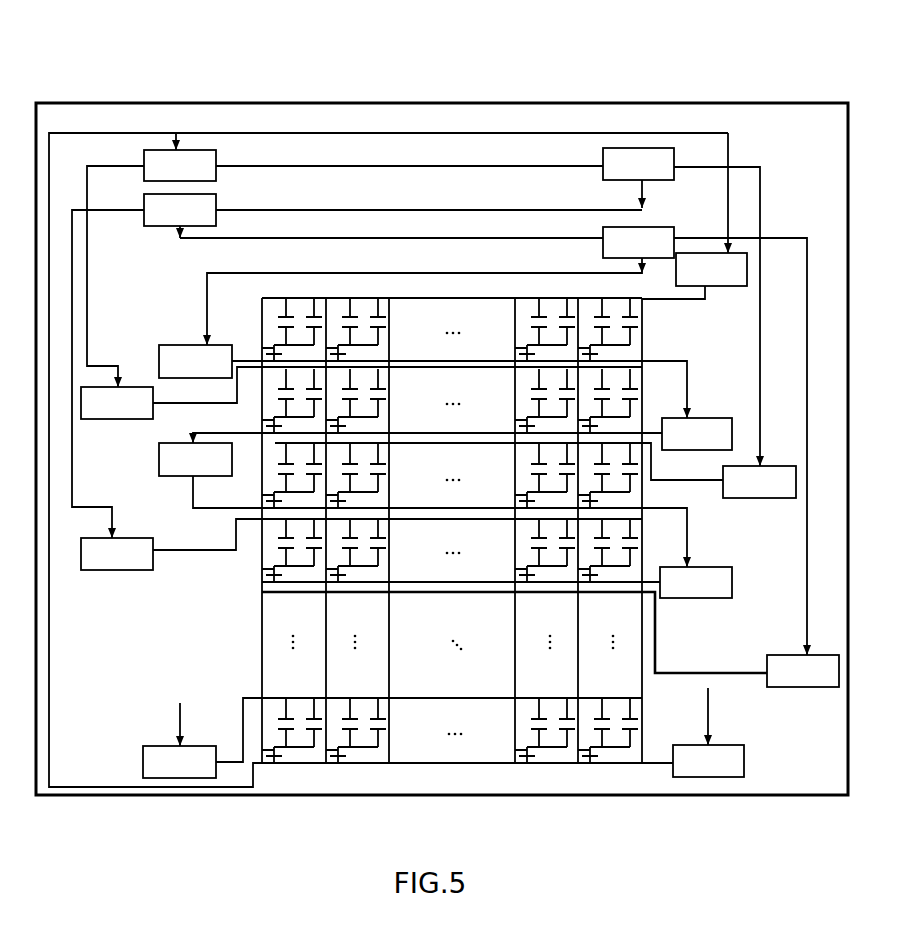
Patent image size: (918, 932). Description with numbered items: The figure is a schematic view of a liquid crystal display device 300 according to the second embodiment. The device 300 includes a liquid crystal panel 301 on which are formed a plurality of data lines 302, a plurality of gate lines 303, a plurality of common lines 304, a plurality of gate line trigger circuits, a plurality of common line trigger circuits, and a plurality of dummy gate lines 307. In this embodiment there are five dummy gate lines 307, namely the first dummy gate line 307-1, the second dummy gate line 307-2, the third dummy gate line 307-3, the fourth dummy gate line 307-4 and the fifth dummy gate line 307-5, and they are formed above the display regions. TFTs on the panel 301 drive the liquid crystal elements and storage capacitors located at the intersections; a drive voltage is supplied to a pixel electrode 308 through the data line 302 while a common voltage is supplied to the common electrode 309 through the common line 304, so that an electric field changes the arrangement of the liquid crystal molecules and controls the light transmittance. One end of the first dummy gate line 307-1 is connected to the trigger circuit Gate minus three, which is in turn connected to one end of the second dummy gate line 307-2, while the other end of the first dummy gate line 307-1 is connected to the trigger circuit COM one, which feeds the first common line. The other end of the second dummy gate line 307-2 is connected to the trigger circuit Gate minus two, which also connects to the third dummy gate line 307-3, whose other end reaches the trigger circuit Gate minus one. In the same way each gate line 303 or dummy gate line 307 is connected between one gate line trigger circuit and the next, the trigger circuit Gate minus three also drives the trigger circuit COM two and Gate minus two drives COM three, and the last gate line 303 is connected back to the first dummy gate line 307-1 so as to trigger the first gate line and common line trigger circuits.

The liquid crystal display device 300 is at (129, 31).
The liquid crystal panel 301 is at (293, 797).
The data line 302 is at (516, 728).
The gate line 303 is at (375, 763).
The common line 304 is at (427, 698).
The dummy gate lines 307 is at (292, 47).
The first dummy gate line 307-1 is at (308, 133).
The second dummy gate line 307-2 is at (355, 166).
The third dummy gate line 307-3 is at (402, 210).
The fourth dummy gate line 307-4 is at (447, 238).
The fifth dummy gate line 307-5 is at (508, 273).
The pixel electrode 308 is at (292, 329).
The common electrode 309 is at (452, 290).